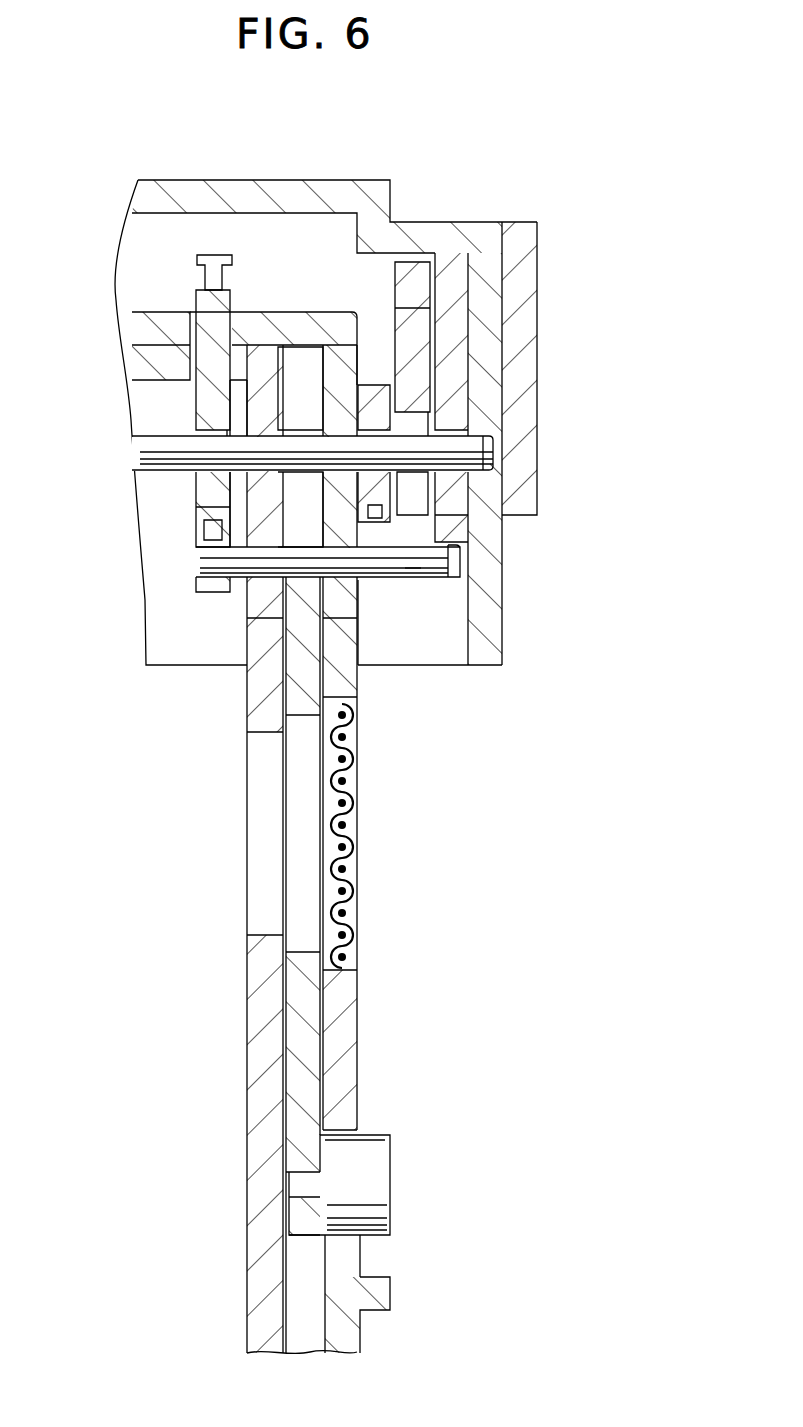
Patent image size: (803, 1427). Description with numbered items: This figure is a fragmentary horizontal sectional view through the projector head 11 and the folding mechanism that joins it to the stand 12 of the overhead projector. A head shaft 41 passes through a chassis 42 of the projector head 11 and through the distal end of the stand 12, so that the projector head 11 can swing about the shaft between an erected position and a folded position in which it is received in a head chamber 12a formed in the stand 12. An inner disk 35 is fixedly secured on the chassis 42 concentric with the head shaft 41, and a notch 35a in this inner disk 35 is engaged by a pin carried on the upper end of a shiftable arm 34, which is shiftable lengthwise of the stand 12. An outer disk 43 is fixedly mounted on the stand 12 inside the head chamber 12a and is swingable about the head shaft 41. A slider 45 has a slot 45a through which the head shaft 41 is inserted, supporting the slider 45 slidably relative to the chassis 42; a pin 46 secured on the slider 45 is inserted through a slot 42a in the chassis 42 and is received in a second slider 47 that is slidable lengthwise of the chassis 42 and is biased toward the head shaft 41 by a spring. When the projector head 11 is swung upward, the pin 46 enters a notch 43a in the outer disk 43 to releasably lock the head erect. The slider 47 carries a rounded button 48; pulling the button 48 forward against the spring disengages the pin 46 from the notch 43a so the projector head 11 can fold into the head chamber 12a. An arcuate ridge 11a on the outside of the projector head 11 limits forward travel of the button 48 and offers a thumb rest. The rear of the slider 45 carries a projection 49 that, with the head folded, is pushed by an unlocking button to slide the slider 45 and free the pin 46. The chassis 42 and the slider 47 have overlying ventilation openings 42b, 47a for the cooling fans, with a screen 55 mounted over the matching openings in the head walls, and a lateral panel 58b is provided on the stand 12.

The projector head 11 is at (388, 1008).
The arcuate ridge 11a is at (385, 1295).
The stand 12 is at (178, 195).
The head chamber 12a is at (318, 255).
The shiftable arm 34 is at (412, 351).
The inner disk 35 is at (375, 400).
The notch 35a is at (385, 508).
The head shaft 41 is at (138, 455).
The chassis 42 is at (268, 1060).
The slot 42a is at (260, 618).
The ventilation opening 42b is at (267, 933).
The outer disk 43 is at (456, 307).
The notch 43a is at (415, 568).
The slider 45 is at (207, 405).
The slot 45a is at (197, 507).
The pin 46 is at (413, 577).
The slider 47 is at (300, 1070).
The ventilation opening 47a is at (302, 948).
The rounded button 48 is at (380, 1183).
The projection 49 is at (203, 262).
The screen 55 is at (345, 870).
The lateral panel 58b is at (517, 452).